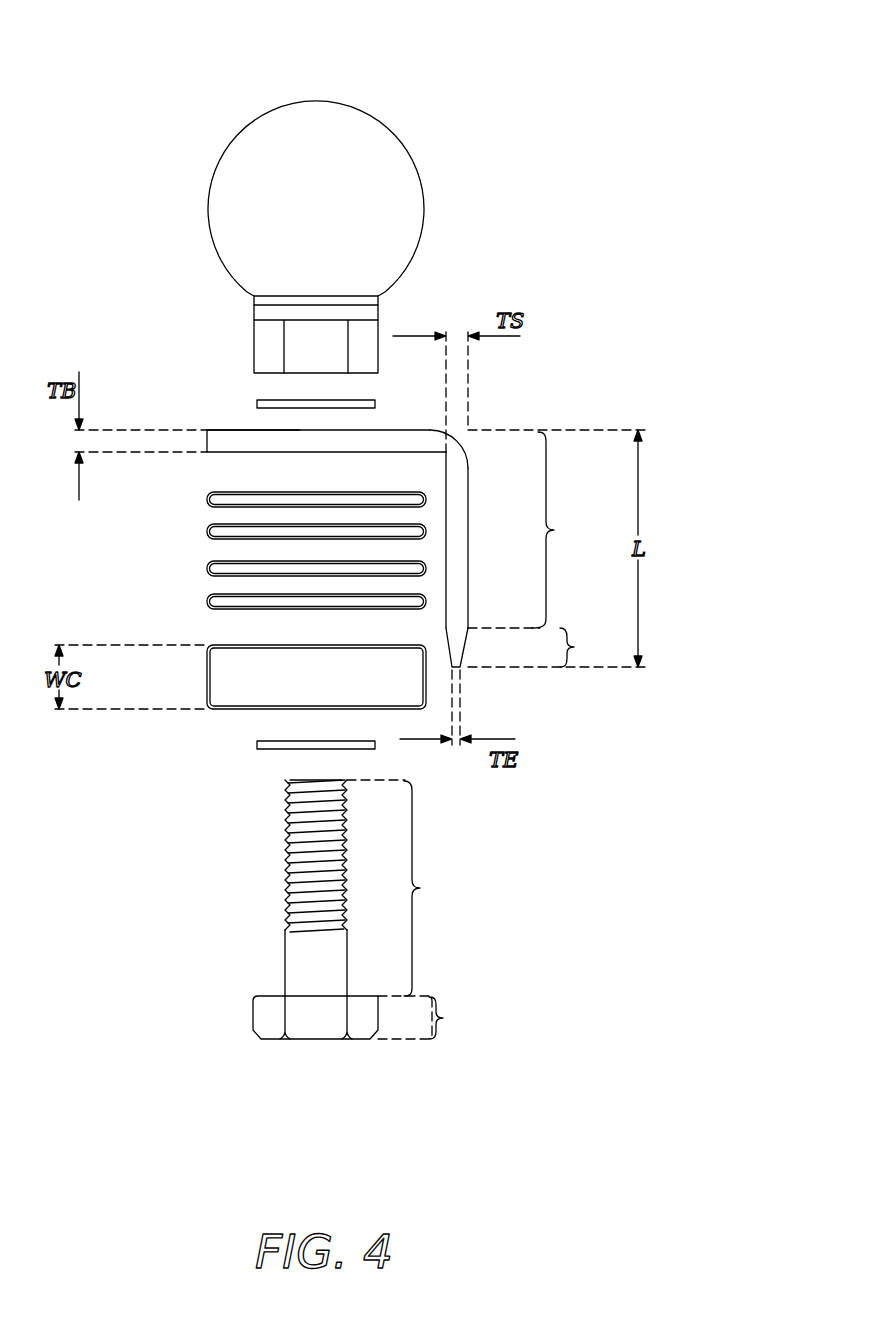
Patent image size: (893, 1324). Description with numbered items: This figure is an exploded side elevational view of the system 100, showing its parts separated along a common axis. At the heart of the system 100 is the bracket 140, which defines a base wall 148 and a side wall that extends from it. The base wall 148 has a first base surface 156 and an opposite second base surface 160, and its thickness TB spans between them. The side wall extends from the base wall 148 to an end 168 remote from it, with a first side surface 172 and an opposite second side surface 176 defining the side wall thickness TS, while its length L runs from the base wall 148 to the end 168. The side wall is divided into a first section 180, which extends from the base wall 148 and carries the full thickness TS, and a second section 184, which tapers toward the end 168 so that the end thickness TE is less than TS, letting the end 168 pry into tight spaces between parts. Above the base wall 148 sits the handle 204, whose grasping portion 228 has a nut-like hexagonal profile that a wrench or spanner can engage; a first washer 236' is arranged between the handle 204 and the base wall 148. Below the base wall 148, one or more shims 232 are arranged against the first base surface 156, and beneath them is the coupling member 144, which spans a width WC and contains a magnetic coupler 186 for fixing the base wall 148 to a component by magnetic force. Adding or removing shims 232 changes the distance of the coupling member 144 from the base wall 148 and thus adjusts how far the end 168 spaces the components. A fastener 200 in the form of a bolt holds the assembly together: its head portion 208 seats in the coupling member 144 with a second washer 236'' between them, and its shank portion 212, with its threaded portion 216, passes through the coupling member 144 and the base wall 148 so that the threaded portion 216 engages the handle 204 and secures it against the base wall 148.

The system 100 is at (460, 60).
The handle 204 is at (403, 148).
The grasping portion 228 is at (254, 342).
The first washer 236' is at (344, 386).
The second washer 236'' is at (296, 773).
The bracket 140 is at (214, 461).
The base wall 148 is at (243, 428).
The second base surface 160 is at (233, 430).
The first base surface 156 is at (388, 455).
The second side surface 176 is at (469, 488).
The first side surface 172 is at (440, 559).
The end 168 is at (455, 670).
The first section 180 is at (564, 530).
The second section 184 is at (588, 647).
The shims 232 is at (207, 500).
The coupling member 144 is at (207, 668).
The magnetic coupler 186 is at (207, 690).
The fastener 200 is at (253, 1018).
The threaded portion 216 is at (285, 870).
The shank portion 212 is at (374, 888).
The head portion 208 is at (367, 1017).